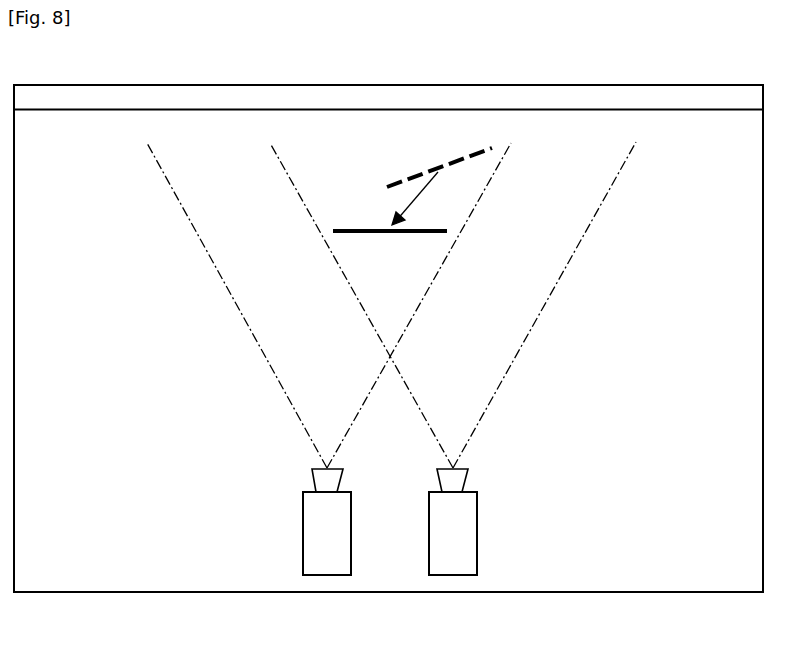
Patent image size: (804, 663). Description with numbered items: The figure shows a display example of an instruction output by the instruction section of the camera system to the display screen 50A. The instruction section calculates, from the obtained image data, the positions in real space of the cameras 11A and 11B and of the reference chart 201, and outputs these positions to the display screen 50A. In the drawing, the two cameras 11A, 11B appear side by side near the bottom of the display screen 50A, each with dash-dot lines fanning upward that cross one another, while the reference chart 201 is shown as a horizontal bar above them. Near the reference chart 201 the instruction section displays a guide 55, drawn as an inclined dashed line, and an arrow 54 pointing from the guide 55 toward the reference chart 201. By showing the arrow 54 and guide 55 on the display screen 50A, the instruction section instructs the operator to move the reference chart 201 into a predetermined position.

The display screen 50A is at (180, 593).
The camera 11A is at (351, 549).
The camera 11B is at (477, 549).
The guide 55 is at (453, 158).
The arrow 54 is at (427, 195).
The reference chart 201 is at (353, 228).